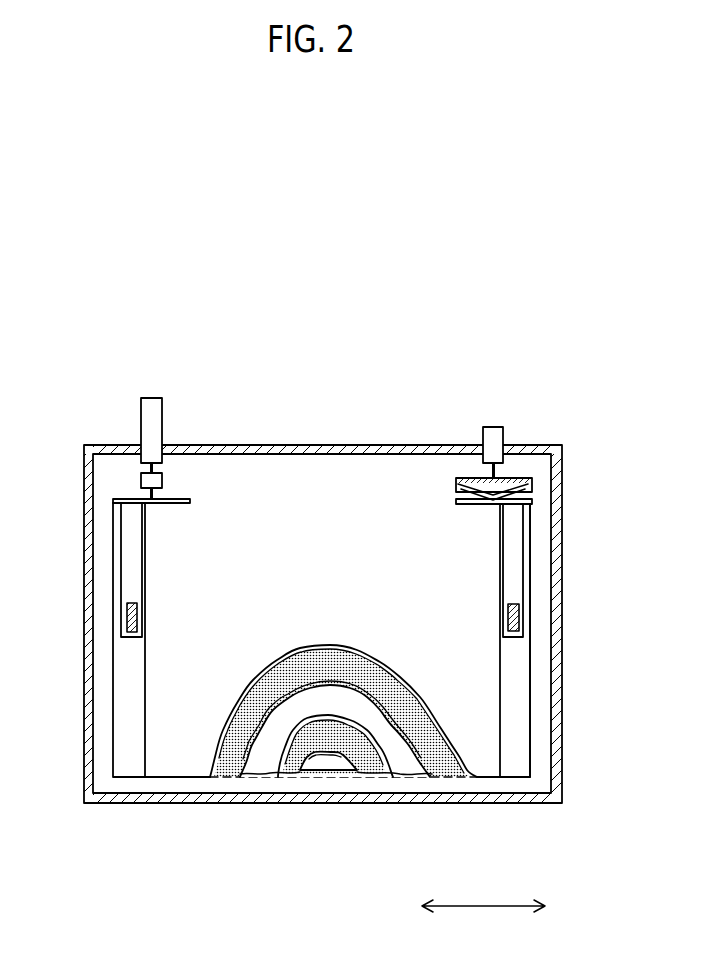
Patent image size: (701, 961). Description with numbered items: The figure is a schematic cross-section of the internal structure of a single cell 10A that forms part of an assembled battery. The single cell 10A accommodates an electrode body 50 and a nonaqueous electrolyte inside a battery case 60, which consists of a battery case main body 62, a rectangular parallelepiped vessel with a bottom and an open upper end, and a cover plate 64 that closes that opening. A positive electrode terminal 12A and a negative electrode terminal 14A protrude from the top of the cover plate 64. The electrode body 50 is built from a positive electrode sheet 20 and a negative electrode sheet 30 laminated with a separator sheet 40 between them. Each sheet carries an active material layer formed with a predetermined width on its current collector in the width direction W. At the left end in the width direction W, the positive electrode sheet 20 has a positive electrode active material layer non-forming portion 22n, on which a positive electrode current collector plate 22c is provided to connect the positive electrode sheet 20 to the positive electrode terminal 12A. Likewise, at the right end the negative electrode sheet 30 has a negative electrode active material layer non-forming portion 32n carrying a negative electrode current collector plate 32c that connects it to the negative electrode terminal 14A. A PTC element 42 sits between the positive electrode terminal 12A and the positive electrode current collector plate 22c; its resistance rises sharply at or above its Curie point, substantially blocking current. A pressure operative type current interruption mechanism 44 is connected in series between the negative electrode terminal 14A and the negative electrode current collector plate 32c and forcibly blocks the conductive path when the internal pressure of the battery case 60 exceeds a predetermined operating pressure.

The single cell 10A is at (560, 354).
The positive electrode terminal 12A is at (152, 404).
The negative electrode terminal 14A is at (492, 430).
The positive electrode sheet 20 is at (220, 763).
The positive electrode current collector plate 22c is at (132, 560).
The positive electrode active material layer non-forming portion 22n is at (135, 707).
The negative electrode sheet 30 is at (292, 758).
The negative electrode current collector plate 32c is at (513, 525).
The negative electrode active material layer non-forming portion 32n is at (515, 690).
The separator sheet 40 is at (173, 757).
The PTC element 42 is at (140, 480).
The pressure operative type current interruption mechanism 44 is at (534, 469).
The electrode body 50 is at (268, 523).
The battery case 60 is at (565, 588).
The battery case main body 62 is at (555, 755).
The cover plate 64 is at (420, 450).
The width direction W is at (483, 892).